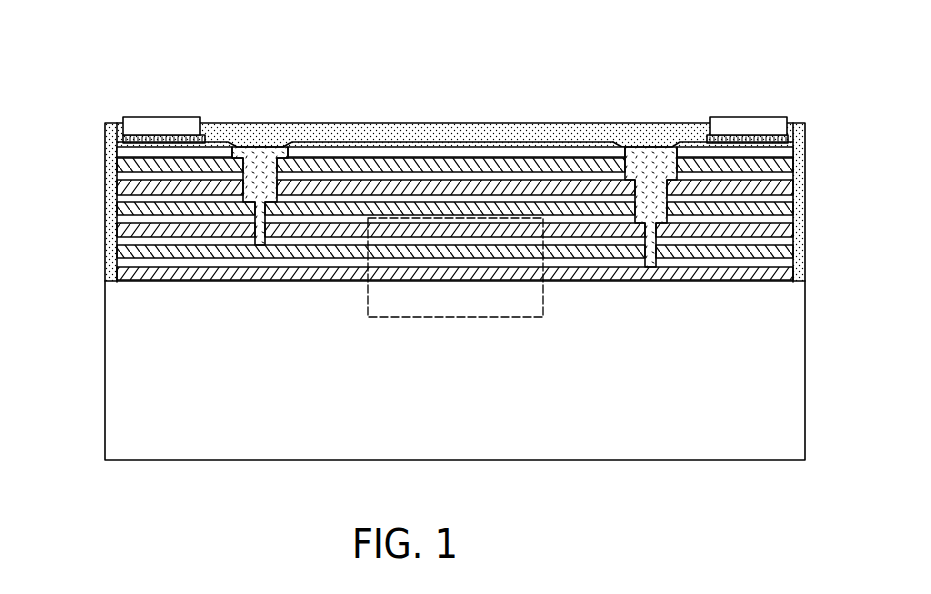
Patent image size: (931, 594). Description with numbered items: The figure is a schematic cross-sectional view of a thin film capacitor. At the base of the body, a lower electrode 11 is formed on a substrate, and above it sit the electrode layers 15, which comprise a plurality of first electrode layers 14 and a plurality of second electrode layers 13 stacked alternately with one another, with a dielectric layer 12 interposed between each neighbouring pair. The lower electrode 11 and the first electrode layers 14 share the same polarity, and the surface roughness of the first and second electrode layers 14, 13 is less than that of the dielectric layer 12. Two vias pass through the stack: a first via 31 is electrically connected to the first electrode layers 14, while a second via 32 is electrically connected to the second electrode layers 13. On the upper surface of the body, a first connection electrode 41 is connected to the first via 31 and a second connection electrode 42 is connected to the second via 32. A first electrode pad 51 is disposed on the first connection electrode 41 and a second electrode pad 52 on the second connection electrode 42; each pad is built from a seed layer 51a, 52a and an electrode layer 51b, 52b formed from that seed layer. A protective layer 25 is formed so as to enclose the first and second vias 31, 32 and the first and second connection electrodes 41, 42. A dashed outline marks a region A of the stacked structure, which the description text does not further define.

The lower electrode 11 is at (110, 282).
The dielectric layer 12 is at (145, 265).
The second electrode layer 13 is at (117, 253).
The first electrode layer 14 is at (117, 233).
The electrode layers 15 is at (403, 242).
The protective layer 25 is at (227, 130).
The first via 31 is at (267, 153).
The second via 32 is at (658, 152).
The first connection electrode 41 is at (110, 144).
The second connection electrode 42 is at (795, 142).
The first electrode pad 51 is at (157, 79).
The seed layer 51a is at (147, 133).
The electrode layer 51b is at (177, 123).
The second electrode pad 52 is at (745, 79).
The seed layer 52a is at (732, 133).
The electrode layer 52b is at (763, 123).
The region A is at (530, 318).